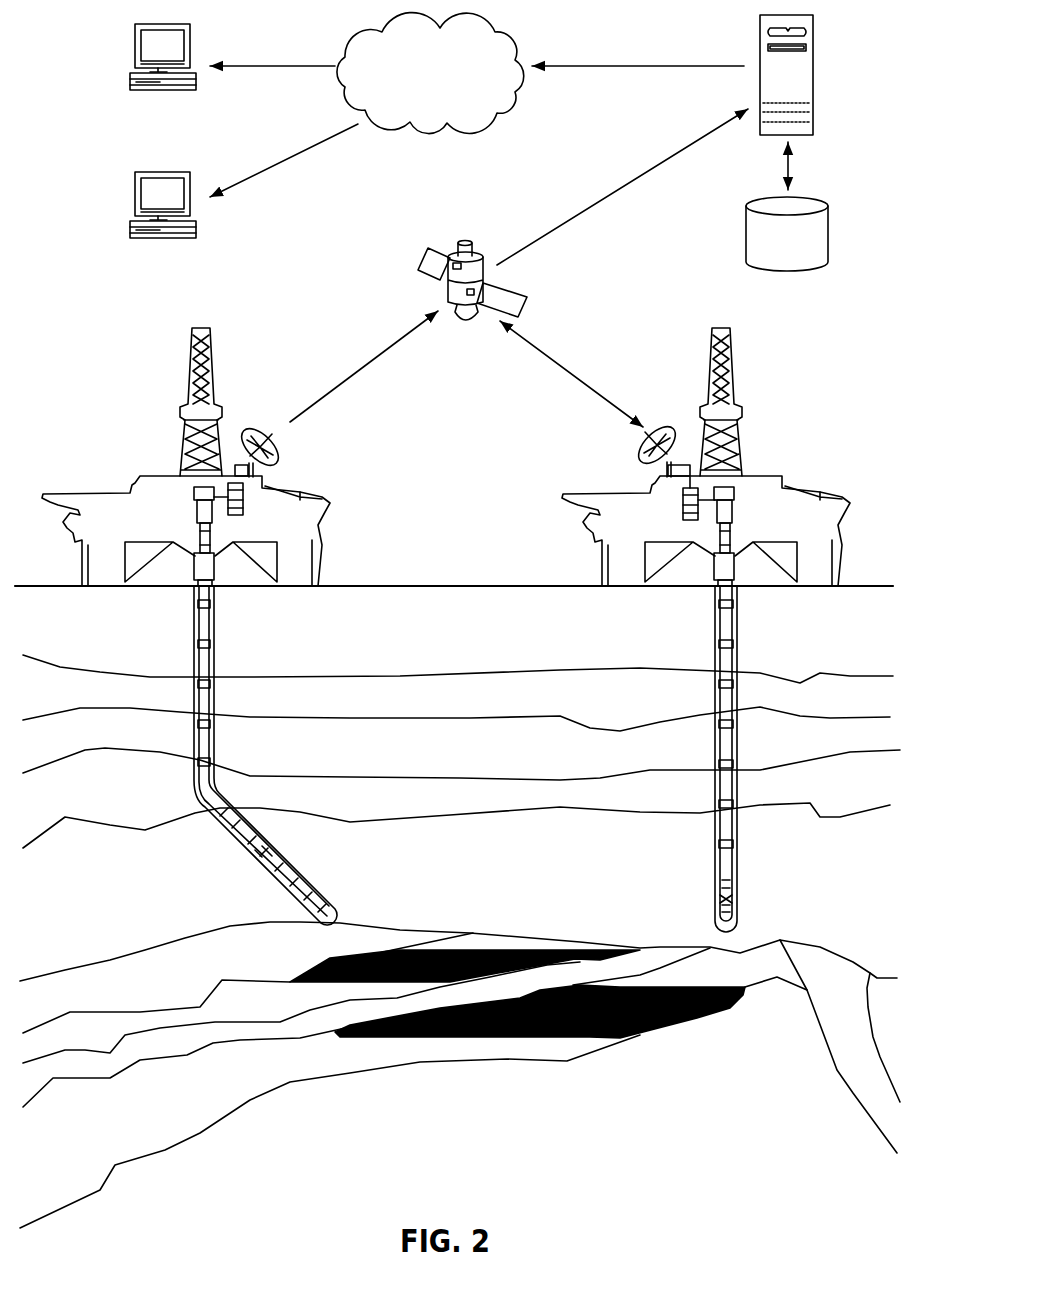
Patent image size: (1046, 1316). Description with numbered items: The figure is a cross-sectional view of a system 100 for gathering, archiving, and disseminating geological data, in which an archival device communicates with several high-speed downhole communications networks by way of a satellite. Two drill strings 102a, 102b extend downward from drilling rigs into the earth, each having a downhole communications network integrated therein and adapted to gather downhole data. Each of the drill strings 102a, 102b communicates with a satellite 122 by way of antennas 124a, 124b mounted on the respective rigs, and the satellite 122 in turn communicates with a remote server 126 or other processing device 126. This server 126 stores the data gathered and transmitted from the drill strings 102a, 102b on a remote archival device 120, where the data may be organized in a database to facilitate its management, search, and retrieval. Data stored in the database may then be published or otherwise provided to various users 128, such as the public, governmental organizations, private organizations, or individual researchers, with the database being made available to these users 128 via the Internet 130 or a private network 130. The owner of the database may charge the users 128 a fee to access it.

The system 100 is at (81, 79).
The drill string 102a is at (255, 747).
The drill string 102b is at (664, 758).
The remote archival device 120 is at (762, 237).
The satellite 122 is at (482, 253).
The antenna 124a is at (247, 420).
The antenna 124b is at (677, 427).
The remote server 126 is at (770, 90).
The users 128 is at (178, 46).
The Internet 130 is at (498, 87).